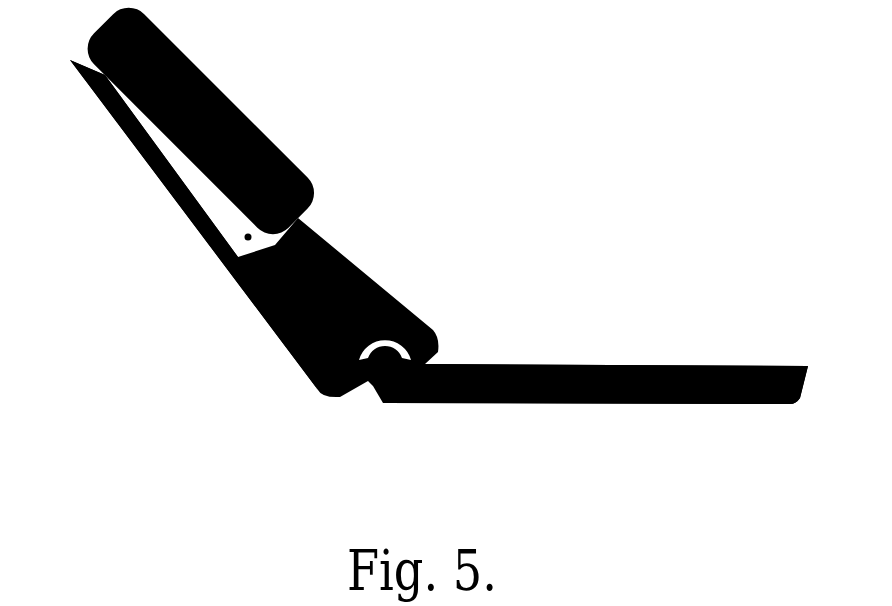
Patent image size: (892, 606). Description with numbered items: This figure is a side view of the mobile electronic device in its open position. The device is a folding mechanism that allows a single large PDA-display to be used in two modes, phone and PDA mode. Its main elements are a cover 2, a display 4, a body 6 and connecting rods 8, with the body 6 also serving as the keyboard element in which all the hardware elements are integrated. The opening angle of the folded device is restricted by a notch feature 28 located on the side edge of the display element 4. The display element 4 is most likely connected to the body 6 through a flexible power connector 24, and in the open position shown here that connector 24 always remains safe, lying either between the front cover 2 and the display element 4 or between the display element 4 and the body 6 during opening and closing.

The cover 2 is at (207, 242).
The display 4 is at (372, 273).
The body 6 is at (635, 365).
The connecting rods 8 is at (242, 112).
The flexible power connector 24 is at (248, 237).
The notch feature 28 is at (137, 150).